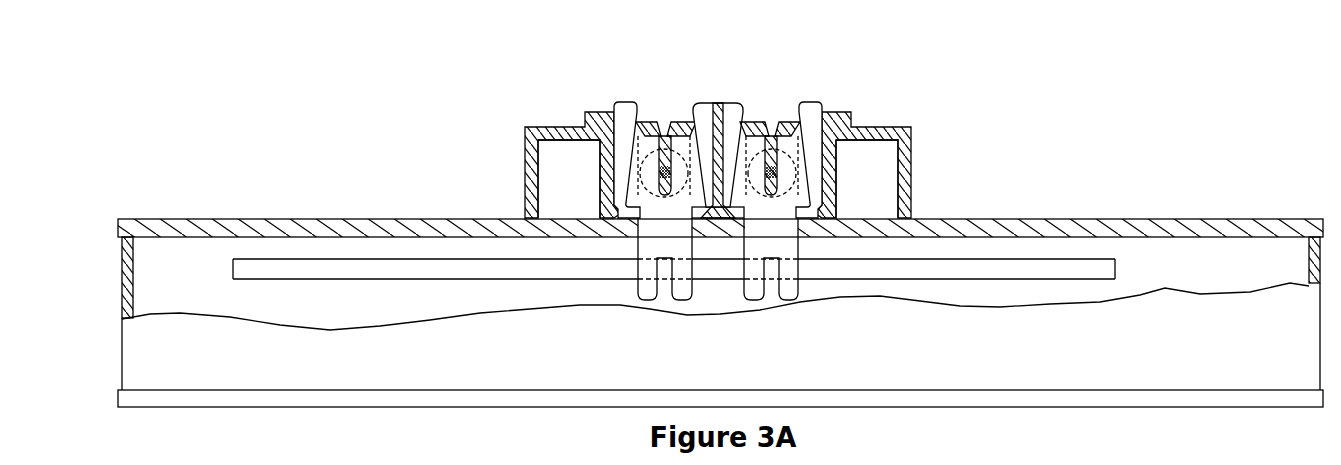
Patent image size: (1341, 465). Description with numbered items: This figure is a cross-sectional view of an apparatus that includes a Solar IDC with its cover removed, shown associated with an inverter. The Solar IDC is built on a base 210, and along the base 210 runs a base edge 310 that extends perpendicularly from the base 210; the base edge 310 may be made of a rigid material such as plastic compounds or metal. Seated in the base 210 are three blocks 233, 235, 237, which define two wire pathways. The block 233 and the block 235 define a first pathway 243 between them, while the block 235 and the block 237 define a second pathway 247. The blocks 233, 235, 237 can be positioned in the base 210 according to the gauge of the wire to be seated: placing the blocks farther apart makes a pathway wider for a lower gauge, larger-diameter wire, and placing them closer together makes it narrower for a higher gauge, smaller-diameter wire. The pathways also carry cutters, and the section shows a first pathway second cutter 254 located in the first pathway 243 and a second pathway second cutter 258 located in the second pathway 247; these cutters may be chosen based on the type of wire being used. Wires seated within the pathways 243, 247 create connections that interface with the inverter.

The base 210 is at (515, 115).
The base edge 310 is at (500, 135).
The block 233 is at (612, 102).
The block 235 is at (716, 102).
The block 237 is at (821, 102).
The first pathway 243 is at (663, 112).
The second pathway 247 is at (770, 112).
The first pathway second cutter 254 is at (634, 190).
The second pathway second cutter 258 is at (800, 180).